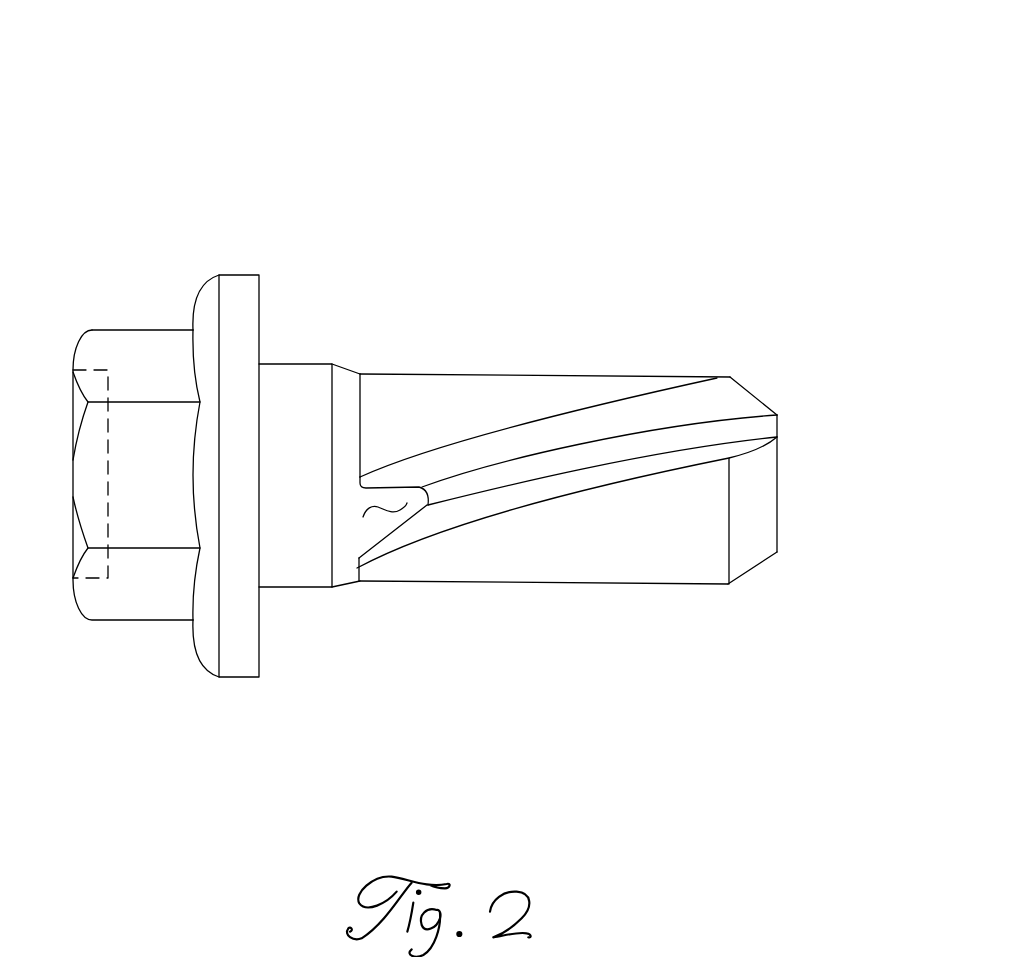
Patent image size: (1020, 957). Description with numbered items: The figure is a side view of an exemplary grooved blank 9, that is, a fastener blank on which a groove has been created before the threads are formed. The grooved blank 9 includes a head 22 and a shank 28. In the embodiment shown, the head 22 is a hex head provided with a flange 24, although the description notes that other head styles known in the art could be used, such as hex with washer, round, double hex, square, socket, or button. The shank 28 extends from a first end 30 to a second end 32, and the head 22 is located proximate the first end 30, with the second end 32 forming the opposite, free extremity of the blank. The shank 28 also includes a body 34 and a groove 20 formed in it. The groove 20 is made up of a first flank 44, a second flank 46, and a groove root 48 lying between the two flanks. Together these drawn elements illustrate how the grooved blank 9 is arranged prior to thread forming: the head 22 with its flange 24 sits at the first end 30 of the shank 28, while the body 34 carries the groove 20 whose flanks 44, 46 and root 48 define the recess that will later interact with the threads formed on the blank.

The grooved blank 9 is at (569, 83).
The groove 20 is at (382, 508).
The head 22 is at (143, 330).
The flange 24 is at (239, 275).
The shank 28 is at (514, 376).
The first end 30 is at (277, 587).
The second end 32 is at (753, 568).
The body 34 is at (297, 364).
The first flank 44 is at (667, 407).
The second flank 46 is at (465, 512).
The groove root 48 is at (735, 427).